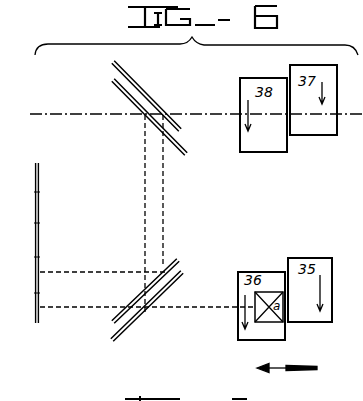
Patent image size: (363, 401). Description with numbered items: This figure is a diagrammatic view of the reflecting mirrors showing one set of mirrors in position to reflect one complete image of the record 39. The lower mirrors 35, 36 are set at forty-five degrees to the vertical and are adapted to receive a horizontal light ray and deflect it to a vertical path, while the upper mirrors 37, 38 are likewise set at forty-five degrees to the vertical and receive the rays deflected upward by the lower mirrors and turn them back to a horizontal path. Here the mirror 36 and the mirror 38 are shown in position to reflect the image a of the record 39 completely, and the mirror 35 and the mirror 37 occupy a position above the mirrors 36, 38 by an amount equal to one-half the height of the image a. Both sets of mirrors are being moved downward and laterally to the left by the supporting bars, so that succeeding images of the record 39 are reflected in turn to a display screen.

The lower mirror 35 is at (140, 297).
The lower mirror 36 is at (156, 316).
The upper mirror 37 is at (160, 92).
The upper mirror 38 is at (131, 100).
The record 39 is at (43, 222).